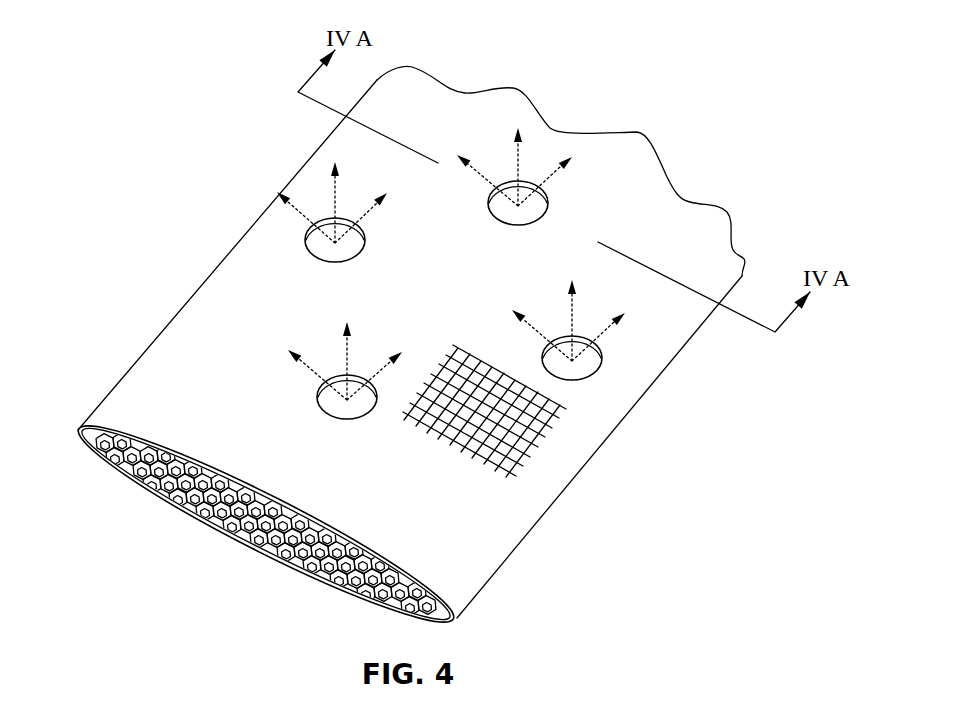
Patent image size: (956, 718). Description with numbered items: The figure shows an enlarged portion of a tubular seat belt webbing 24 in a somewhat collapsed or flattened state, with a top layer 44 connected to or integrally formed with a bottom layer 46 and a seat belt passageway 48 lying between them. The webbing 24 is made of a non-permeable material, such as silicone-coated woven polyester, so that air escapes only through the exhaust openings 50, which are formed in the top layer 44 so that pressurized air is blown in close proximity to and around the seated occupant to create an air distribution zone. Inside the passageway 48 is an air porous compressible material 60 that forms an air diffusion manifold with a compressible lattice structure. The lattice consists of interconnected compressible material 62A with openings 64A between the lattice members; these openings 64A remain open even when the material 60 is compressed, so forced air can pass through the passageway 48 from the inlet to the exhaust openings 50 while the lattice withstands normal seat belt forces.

The tubular seat belt webbing 24 is at (178, 372).
The top layer 44 is at (170, 443).
The bottom layer 46 is at (193, 513).
The seat belt passageway 48 is at (262, 553).
The exhaust openings 50 is at (325, 243).
The air porous compressible material 60 is at (333, 582).
The compressible material 62A is at (108, 452).
The openings 64A is at (222, 528).